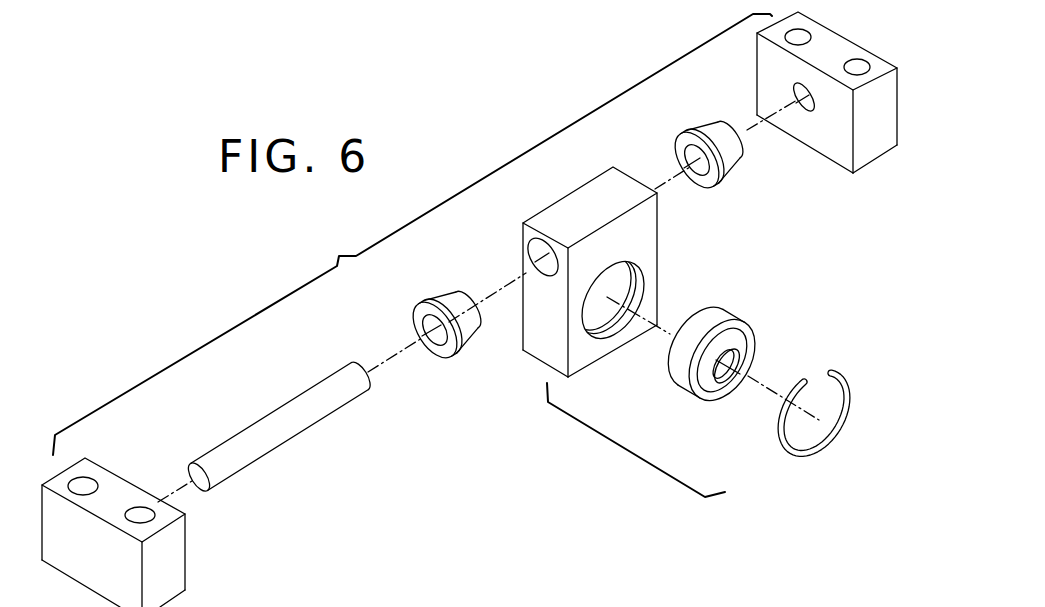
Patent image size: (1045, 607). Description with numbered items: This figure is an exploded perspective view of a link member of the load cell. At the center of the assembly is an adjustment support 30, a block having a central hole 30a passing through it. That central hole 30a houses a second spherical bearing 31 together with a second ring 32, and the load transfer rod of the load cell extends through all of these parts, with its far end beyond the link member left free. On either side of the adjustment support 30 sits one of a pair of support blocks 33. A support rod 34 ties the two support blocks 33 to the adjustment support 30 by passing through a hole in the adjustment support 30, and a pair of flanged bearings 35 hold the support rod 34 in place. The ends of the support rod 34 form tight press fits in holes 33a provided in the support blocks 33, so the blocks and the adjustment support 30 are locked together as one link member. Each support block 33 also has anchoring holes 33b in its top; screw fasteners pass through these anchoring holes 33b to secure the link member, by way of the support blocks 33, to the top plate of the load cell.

The adjustment support 30 is at (580, 197).
The central hole 30a is at (638, 275).
The second spherical bearing 31 is at (730, 323).
The second ring 32 is at (843, 377).
The support blocks 33 is at (188, 552).
The holes 33a is at (807, 110).
The anchoring holes 33b is at (90, 481).
The support rod 34 is at (285, 412).
The flanged bearings 35 is at (452, 302).